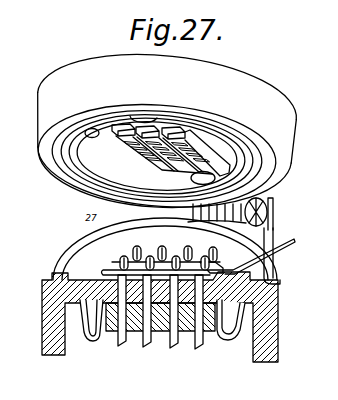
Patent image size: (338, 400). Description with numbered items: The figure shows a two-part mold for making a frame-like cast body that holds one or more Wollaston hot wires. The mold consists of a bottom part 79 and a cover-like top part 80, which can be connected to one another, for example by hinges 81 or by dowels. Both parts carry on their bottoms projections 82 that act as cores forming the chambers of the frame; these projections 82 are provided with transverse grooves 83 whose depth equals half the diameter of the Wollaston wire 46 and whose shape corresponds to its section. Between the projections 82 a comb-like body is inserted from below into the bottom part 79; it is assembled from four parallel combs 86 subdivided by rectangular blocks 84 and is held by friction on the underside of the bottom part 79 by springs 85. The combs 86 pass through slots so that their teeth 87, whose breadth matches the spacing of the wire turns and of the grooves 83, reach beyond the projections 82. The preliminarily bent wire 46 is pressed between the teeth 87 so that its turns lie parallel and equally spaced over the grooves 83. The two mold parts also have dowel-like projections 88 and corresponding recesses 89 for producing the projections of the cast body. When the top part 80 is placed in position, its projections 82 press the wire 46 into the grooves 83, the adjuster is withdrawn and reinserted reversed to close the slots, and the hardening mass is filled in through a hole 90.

The cover-like top part 80 is at (62, 88).
The hole 90 is at (93, 131).
The transverse grooves 83 is at (200, 150).
The projections 82 is at (214, 168).
The dowel-like projections 88 is at (213, 180).
The hinges 81 is at (268, 210).
The teeth 87 is at (224, 252).
The recesses 89 is at (188, 252).
The bottom part 79 is at (97, 268).
The Wollaston wire 46 is at (221, 272).
The combs 86 is at (115, 340).
The rectangular blocks 84 is at (187, 333).
The springs 85 is at (232, 337).